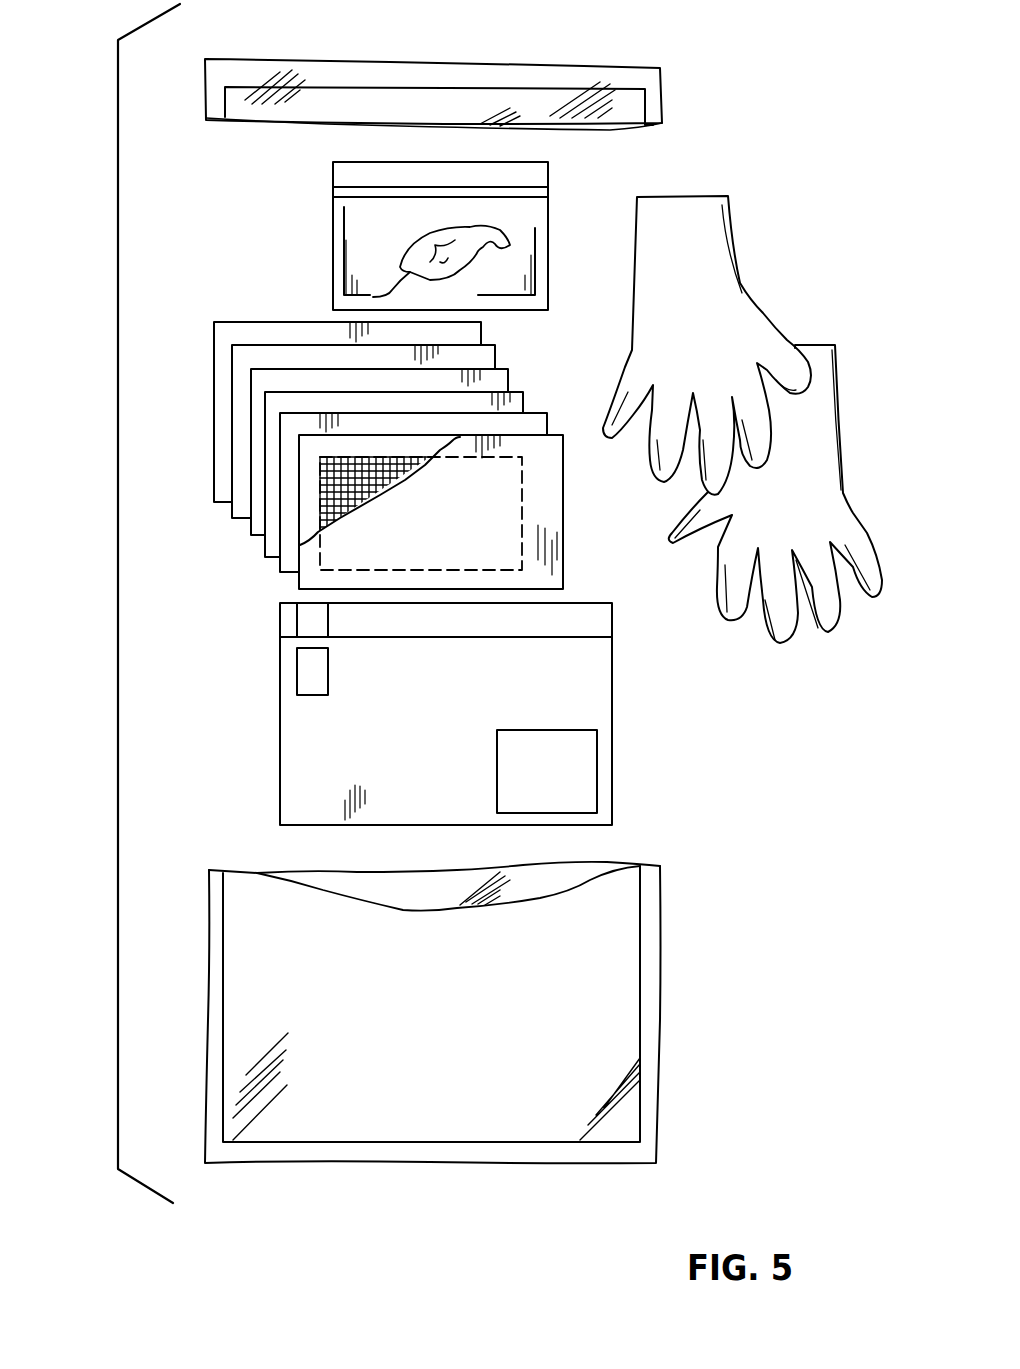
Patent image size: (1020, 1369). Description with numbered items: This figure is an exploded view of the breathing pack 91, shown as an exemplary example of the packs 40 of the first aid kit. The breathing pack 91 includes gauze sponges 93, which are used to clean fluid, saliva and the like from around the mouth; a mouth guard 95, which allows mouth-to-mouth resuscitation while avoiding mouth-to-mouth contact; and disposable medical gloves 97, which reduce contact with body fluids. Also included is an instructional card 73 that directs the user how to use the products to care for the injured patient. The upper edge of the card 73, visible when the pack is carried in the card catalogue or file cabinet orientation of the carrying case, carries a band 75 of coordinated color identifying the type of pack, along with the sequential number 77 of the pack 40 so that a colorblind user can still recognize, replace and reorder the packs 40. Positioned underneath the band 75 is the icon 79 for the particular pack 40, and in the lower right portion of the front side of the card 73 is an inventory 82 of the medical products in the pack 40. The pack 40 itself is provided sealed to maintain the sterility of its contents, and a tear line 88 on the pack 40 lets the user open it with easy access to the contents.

The pack 40 is at (660, 988).
The instructional card 73 is at (298, 781).
The band 75 is at (597, 623).
The sequential number 77 is at (302, 623).
The icon 79 is at (305, 673).
The inventory 82 is at (580, 787).
The tear line 88 is at (248, 115).
The breathing pack 91 is at (115, 535).
The gauze sponges 93 is at (214, 405).
The mouth guard 95 is at (345, 250).
The disposable medical gloves 97 is at (823, 388).